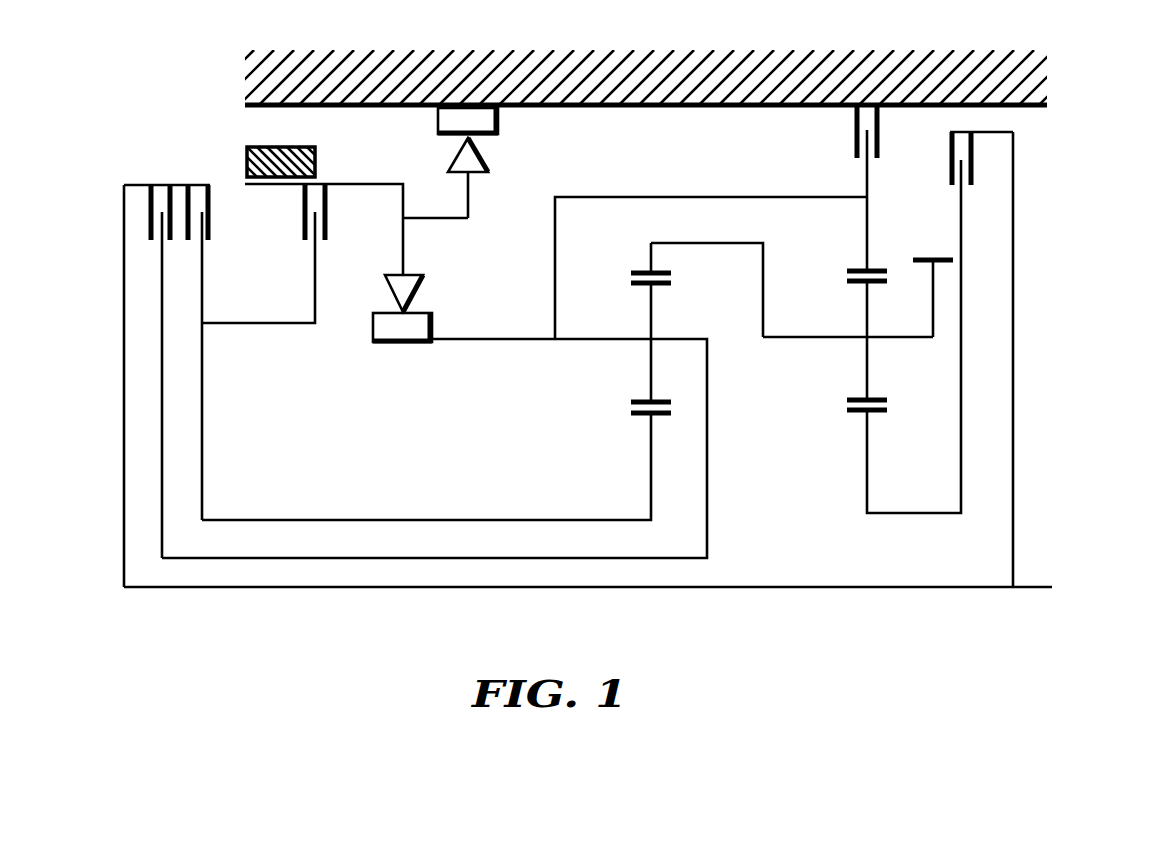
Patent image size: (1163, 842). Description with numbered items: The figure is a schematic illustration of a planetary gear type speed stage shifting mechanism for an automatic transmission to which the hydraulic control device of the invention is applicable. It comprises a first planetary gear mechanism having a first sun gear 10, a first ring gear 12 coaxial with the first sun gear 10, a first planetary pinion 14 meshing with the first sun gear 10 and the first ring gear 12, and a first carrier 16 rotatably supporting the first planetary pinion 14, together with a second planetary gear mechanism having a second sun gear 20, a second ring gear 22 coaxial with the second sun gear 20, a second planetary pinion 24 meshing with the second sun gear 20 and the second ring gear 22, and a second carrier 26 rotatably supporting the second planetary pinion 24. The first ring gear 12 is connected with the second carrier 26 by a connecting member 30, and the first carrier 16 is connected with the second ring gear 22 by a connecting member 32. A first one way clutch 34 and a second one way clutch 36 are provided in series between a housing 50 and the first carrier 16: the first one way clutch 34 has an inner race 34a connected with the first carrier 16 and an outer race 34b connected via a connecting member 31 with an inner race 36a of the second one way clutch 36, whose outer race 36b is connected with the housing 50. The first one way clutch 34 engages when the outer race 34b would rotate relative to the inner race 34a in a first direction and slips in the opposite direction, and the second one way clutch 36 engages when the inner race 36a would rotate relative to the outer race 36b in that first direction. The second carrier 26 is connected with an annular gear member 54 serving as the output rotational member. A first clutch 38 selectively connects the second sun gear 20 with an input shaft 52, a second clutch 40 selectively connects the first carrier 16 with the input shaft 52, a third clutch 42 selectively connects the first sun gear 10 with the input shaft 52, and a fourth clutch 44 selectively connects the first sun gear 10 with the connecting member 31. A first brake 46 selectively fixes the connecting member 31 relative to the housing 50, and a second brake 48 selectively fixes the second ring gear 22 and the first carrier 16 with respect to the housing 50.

The first sun gear 10 is at (643, 416).
The first ring gear 12 is at (641, 271).
The first planetary pinion 14 is at (641, 286).
The first carrier 16 is at (434, 448).
The second sun gear 20 is at (858, 413).
The second ring gear 22 is at (861, 270).
The second planetary pinion 24 is at (878, 285).
The second carrier 26 is at (802, 339).
The connecting member 30 is at (700, 244).
The connecting member 31 is at (405, 243).
The connecting member 32 is at (650, 197).
The first one way clutch 34 is at (411, 336).
The inner race 34a is at (420, 342).
The outer race 34b is at (388, 283).
The second one way clutch 36 is at (448, 160).
The inner race 36a is at (488, 162).
The outer race 36b is at (498, 121).
The first clutch 38 is at (950, 150).
The second clutch 40 is at (150, 218).
The third clutch 42 is at (209, 229).
The fourth clutch 44 is at (326, 218).
The first brake 46 is at (315, 160).
The second brake 48 is at (857, 156).
The housing 50 is at (1045, 96).
The input shaft 52 is at (1030, 586).
The annular gear member 54 is at (936, 258).